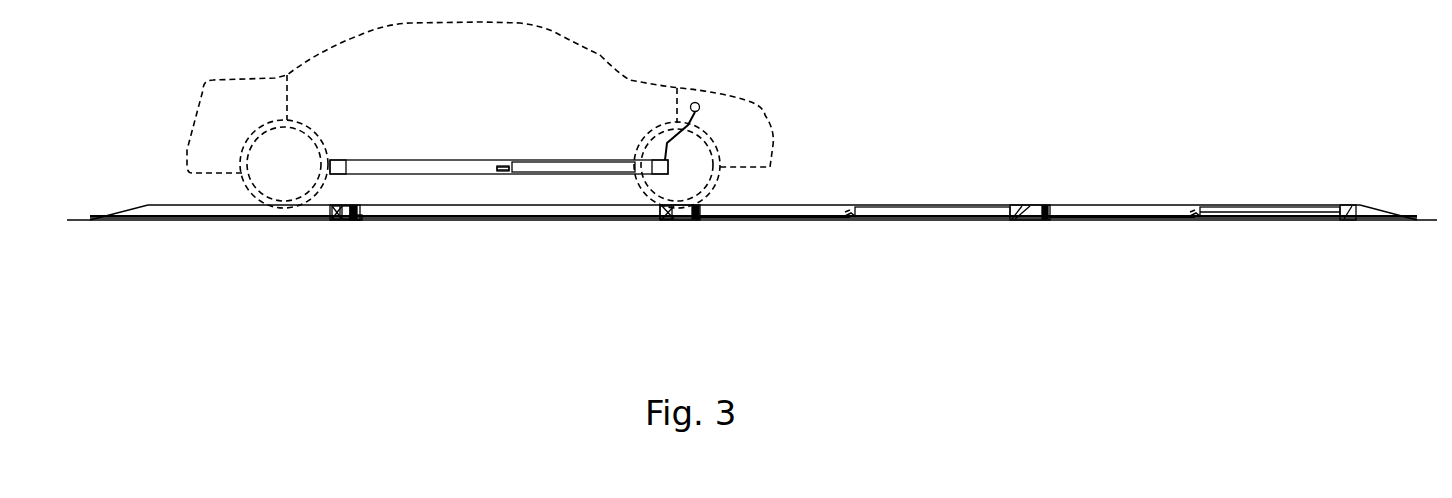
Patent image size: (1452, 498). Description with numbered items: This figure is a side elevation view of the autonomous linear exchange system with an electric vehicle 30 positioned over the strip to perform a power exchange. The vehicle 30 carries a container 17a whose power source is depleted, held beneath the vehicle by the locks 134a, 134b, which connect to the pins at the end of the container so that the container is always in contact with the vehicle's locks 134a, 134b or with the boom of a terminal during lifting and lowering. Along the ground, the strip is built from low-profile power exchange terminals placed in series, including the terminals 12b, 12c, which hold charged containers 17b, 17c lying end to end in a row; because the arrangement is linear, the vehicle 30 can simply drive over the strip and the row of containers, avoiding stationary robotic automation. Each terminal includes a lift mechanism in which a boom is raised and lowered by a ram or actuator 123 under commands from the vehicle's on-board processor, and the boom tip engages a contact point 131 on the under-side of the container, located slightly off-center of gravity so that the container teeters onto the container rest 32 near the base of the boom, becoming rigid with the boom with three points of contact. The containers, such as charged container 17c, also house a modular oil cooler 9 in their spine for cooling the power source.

The electric vehicle 30 is at (524, 87).
The container with depleted power source 17a is at (440, 150).
The container with charged power source 17b is at (883, 192).
The container with charged power source 17c is at (1203, 188).
The lock 134a is at (657, 174).
The lock 134b is at (339, 174).
The container rest 32 is at (348, 220).
The ram or actuator 123 is at (353, 222).
The contact point 131 is at (503, 171).
The power exchange terminal 12b is at (772, 220).
The power exchange terminal 12c is at (1122, 220).
The oil cooler 9 is at (1270, 210).